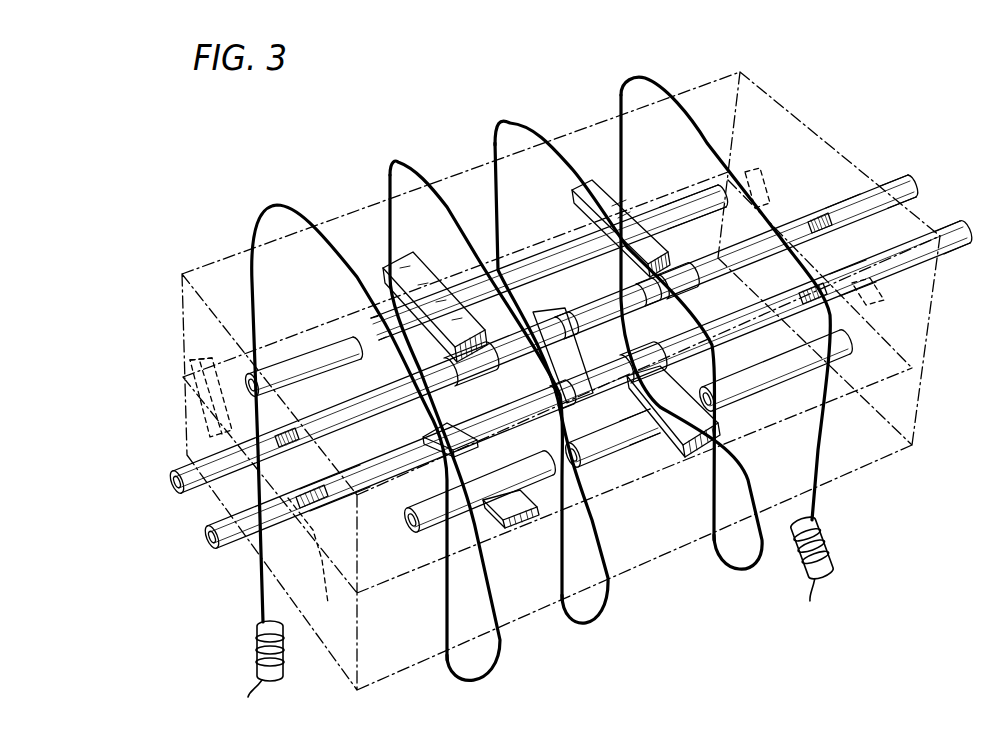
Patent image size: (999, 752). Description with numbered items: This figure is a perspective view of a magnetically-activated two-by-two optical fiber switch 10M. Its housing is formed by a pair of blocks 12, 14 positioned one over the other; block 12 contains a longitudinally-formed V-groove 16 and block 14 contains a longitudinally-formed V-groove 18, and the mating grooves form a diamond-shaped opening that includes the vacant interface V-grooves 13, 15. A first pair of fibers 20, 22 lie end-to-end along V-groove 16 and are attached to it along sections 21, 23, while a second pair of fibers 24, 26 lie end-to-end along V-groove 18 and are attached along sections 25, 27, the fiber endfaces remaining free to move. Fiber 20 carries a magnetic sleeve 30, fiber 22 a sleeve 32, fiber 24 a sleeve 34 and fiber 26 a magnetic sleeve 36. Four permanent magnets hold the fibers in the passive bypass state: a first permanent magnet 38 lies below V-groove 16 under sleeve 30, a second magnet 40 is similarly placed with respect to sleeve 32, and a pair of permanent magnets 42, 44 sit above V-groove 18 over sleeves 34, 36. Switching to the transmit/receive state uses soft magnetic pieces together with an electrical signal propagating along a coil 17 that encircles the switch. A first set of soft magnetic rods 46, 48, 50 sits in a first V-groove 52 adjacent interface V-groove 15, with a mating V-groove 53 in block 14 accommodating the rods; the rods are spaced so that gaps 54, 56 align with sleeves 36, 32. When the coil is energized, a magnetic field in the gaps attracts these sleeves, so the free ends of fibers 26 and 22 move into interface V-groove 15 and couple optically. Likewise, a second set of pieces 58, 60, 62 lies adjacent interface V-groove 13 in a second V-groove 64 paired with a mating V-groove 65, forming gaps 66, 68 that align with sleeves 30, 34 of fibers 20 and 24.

The optical fiber switch 10M is at (266, 117).
The block 12 is at (922, 400).
The interface V-groove 13 is at (775, 219).
The block 14 is at (942, 296).
The interface V-groove 15 is at (882, 291).
The V-groove 16 is at (829, 305).
The coil 17 is at (252, 228).
The V-groove 18 is at (835, 207).
The fiber 20 is at (245, 548).
The section 21 is at (328, 488).
The fiber 22 is at (964, 227).
The section 23 is at (849, 282).
The fiber 24 is at (912, 180).
The section 25 is at (292, 425).
The fiber 26 is at (172, 478).
The section 27 is at (812, 218).
The magnetic sleeve 30 is at (437, 430).
The sleeve 32 is at (628, 358).
The sleeve 34 is at (672, 288).
The magnetic sleeve 36 is at (480, 362).
The permanent magnet 38 is at (517, 528).
The magnet 40 is at (694, 445).
The permanent magnet 42 is at (597, 187).
The permanent magnet 44 is at (383, 268).
The soft magnetic piece 46 is at (428, 532).
The soft magnetic piece 48 is at (640, 440).
The soft magnetic piece 50 is at (785, 368).
The V-groove 52 is at (329, 600).
The mating V-groove 53 is at (330, 548).
The gap 54 is at (580, 465).
The gap 56 is at (680, 452).
The soft magnetic piece 58 is at (292, 347).
The soft magnetic piece 60 is at (552, 252).
The soft magnetic piece 62 is at (683, 207).
The V-groove 64 is at (205, 428).
The mating V-groove 65 is at (198, 378).
The gap 66 is at (365, 335).
The gap 68 is at (632, 205).